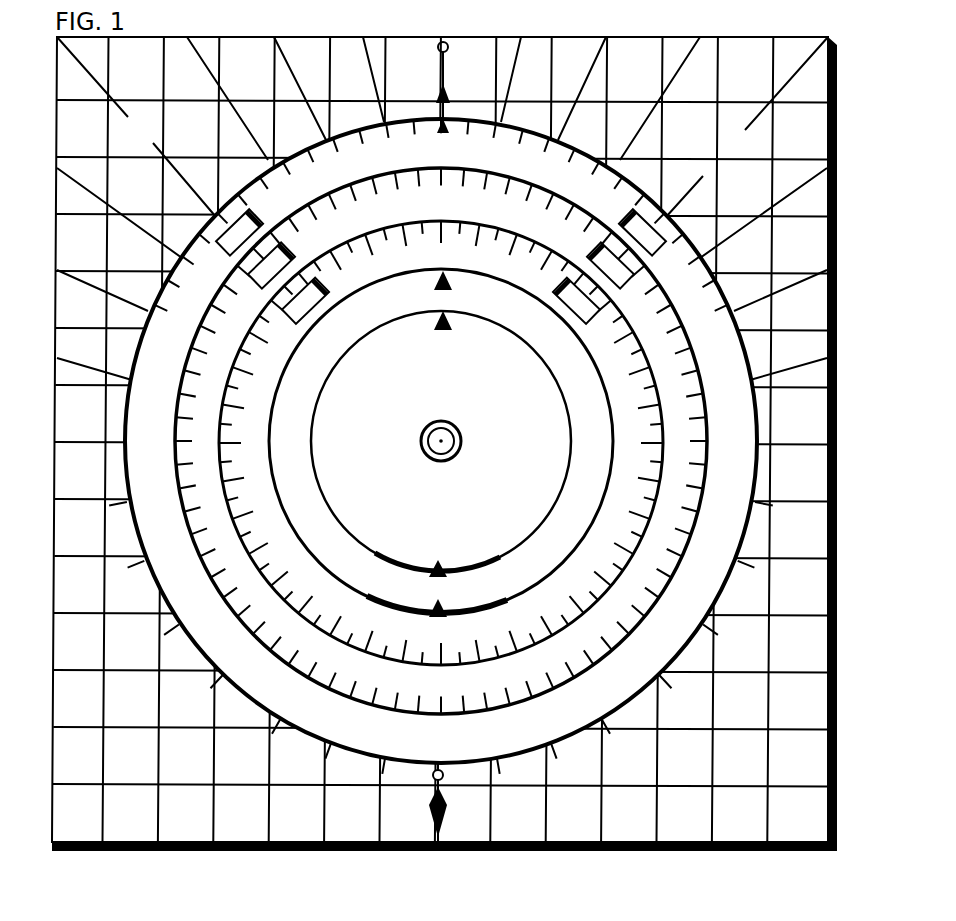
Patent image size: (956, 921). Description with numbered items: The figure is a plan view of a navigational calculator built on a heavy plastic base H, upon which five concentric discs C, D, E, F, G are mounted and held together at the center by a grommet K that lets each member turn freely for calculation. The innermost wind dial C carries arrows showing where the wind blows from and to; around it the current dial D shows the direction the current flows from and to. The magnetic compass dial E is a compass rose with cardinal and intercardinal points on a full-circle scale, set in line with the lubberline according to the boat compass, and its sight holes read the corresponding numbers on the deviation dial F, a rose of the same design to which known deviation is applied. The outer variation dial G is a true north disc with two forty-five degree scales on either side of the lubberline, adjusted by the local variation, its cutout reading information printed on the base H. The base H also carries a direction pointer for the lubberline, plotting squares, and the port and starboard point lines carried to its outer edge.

The wind dial C is at (441, 444).
The current dial D is at (441, 443).
The magnetic compass dial E is at (441, 443).
The deviation dial F is at (441, 441).
The variation dial G is at (441, 441).
The calculator base H is at (802, 757).
The grommet K is at (425, 425).